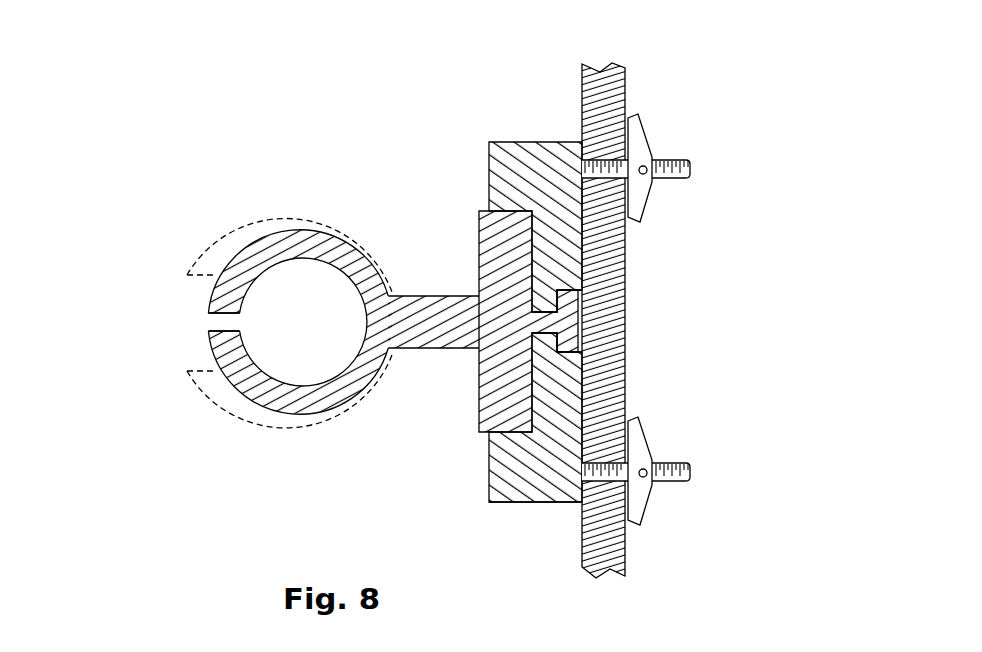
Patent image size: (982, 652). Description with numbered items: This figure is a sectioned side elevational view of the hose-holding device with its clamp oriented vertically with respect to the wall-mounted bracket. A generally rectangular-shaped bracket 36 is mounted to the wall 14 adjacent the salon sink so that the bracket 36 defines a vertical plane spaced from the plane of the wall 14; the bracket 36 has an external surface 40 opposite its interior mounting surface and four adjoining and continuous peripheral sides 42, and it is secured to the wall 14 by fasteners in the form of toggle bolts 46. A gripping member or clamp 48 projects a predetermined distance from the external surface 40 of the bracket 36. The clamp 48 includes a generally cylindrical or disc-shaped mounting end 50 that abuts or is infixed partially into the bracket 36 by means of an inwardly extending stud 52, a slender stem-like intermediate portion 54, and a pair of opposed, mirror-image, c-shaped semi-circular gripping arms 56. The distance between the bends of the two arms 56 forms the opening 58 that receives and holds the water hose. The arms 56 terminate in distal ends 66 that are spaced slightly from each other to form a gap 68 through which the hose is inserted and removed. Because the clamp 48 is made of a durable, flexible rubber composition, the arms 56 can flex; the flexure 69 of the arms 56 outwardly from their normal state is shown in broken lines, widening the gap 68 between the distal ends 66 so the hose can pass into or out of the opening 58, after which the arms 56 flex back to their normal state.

The wall 14 is at (607, 65).
The bracket 36 is at (492, 142).
The external surface 40 is at (489, 492).
The peripheral sides 42 is at (533, 504).
The toggle bolts 46 is at (679, 160).
The clamp 48 is at (352, 332).
The mounting end 50 is at (478, 233).
The stud 52 is at (585, 322).
The intermediate portion 54 is at (422, 296).
The gripping arms 56 is at (344, 237).
The opening 58 is at (295, 310).
The distal ends 66 is at (218, 313).
The gap 68 is at (220, 322).
The flexure 69 is at (225, 227).